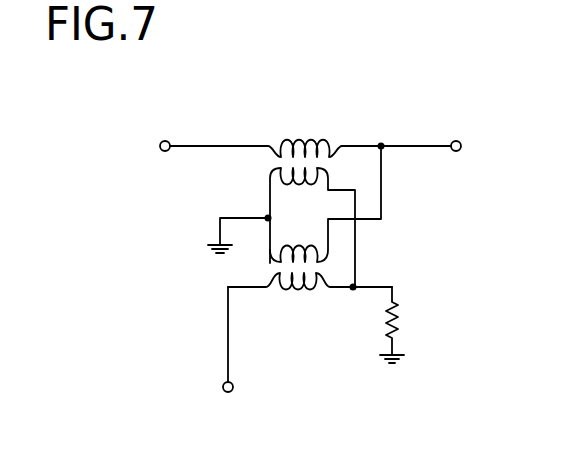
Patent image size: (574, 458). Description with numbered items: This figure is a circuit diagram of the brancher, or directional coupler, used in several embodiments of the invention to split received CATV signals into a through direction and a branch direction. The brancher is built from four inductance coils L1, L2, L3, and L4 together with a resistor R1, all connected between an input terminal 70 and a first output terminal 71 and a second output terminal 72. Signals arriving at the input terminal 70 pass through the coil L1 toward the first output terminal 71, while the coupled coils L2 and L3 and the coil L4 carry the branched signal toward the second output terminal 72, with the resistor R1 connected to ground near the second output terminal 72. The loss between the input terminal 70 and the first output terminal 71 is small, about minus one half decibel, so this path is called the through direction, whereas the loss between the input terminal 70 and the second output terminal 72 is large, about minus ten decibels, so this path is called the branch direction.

The input terminal 70 is at (163, 140).
The first output terminal 71 is at (458, 141).
The second output terminal 72 is at (222, 390).
The inductance coil L1 is at (310, 135).
The inductance coil L2 is at (312, 227).
The inductance coil L3 is at (325, 204).
The inductance coil L4 is at (310, 300).
The resistor R1 is at (404, 325).